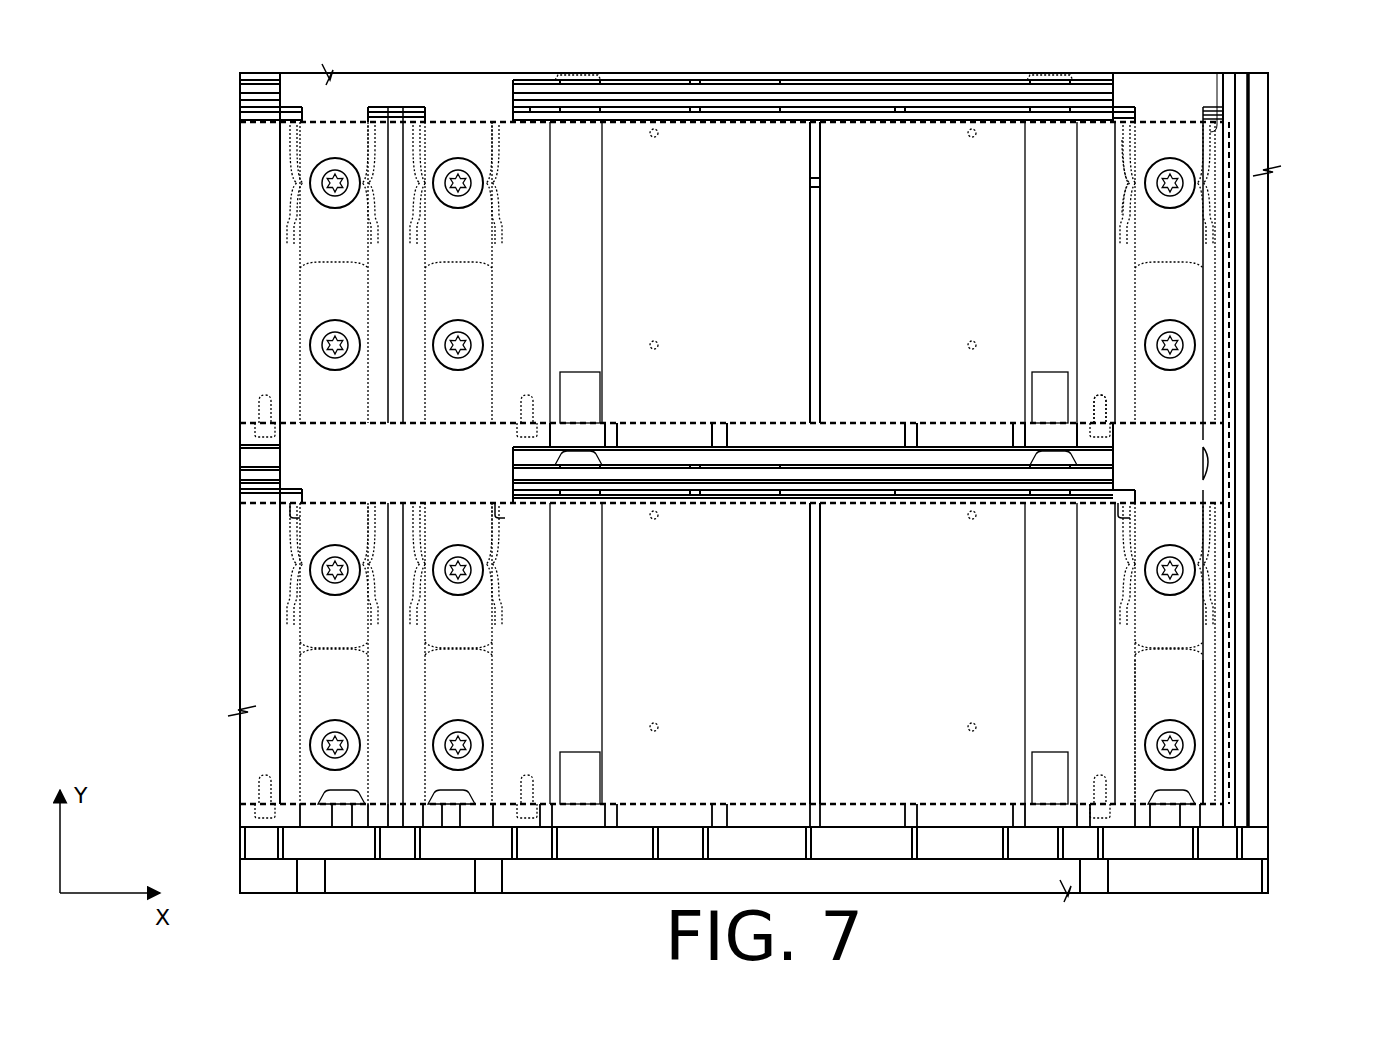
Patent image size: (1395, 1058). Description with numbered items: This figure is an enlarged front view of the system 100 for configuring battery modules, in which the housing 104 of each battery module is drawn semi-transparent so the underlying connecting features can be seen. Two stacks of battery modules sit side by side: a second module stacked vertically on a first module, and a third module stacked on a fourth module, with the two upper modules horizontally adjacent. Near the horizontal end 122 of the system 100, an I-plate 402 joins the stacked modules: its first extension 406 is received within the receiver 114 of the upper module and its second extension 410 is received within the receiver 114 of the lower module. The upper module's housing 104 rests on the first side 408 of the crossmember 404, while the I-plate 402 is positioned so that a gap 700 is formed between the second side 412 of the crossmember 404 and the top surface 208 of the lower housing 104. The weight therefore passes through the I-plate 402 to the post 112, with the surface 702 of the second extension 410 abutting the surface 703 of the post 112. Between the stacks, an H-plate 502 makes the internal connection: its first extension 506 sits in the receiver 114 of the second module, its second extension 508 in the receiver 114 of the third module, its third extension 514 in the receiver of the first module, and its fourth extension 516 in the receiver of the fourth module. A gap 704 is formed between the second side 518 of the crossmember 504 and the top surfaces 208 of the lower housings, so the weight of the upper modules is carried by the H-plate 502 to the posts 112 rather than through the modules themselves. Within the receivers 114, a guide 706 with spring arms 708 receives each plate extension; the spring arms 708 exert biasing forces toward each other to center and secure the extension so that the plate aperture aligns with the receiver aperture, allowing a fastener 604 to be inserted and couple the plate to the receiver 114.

The system 100 is at (1300, 78).
The housing 104 is at (888, 122).
The post 112 is at (1200, 688).
The receiver 114 is at (1108, 742).
The horizontal end 122 is at (1278, 252).
The top surface 208 is at (932, 505).
The I-plate 402 is at (1205, 448).
The crossmember 404 is at (1169, 458).
The first extension 406 is at (1135, 300).
The first side 408 is at (1125, 418).
The second extension 410 is at (1200, 618).
The second side 412 is at (1118, 503).
The H-plate 502 is at (280, 462).
The crossmember 504 is at (407, 467).
The first extension 506 is at (495, 300).
The second extension 508 is at (295, 300).
The third extension 514 is at (490, 625).
The fourth extension 516 is at (298, 623).
The second side 518 is at (505, 508).
The fastener 604 is at (1180, 758).
The gap 700 is at (1210, 497).
The surface 702 is at (1145, 648).
The surface 703 is at (1160, 651).
The gap 704 is at (290, 503).
The guide 706 is at (1118, 122).
The spring arm 708 is at (1125, 222).